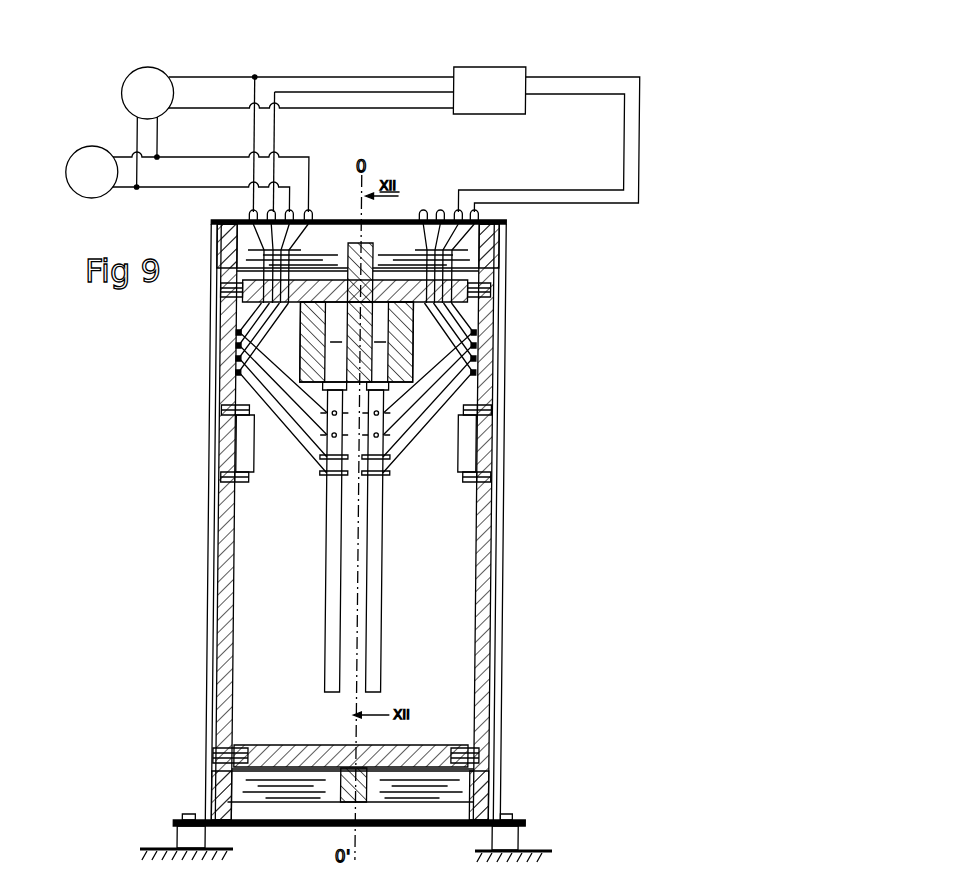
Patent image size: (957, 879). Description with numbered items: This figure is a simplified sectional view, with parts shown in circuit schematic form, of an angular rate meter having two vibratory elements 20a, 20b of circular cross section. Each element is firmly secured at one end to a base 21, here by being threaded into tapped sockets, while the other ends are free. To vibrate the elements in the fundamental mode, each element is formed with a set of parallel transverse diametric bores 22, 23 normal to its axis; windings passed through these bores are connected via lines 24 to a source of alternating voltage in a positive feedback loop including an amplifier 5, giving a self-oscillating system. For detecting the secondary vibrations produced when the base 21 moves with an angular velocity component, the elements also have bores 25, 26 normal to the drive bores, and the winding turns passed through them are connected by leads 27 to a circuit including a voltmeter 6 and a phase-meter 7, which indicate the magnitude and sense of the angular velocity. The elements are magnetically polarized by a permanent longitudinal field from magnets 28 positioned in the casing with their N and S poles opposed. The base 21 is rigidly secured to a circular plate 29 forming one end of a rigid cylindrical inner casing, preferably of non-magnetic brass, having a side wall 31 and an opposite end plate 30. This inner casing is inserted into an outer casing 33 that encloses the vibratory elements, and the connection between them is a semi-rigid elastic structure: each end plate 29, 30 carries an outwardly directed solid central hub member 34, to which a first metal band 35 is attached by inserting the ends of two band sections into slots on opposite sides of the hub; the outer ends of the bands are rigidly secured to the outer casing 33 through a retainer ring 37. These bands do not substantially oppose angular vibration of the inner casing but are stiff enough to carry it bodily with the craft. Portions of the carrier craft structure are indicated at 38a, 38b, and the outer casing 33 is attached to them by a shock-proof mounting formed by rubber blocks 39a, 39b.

The amplifier 5 is at (497, 106).
The voltmeter 6 is at (80, 163).
The phase-meter 7 is at (149, 74).
The vibratory element 20a is at (331, 661).
The vibratory element 20b is at (384, 660).
The base 21 is at (310, 336).
The transverse diametric bore 22 is at (382, 413).
The transverse diametric bore 23 is at (382, 436).
The lines 24 is at (622, 163).
The bore 25 is at (328, 458).
The bore 26 is at (333, 477).
The leads 27 is at (306, 203).
The magnet 28 is at (237, 443).
The circular plate 29 is at (470, 290).
The end plate 30 is at (278, 745).
The side wall 31 is at (240, 582).
The outer casing 33 is at (500, 788).
The central hub member 34 is at (373, 244).
The first metal band 35 is at (339, 253).
The retainer ring 37 is at (503, 245).
The carrier craft structure 38a is at (232, 857).
The carrier craft structure 38b is at (552, 861).
The rubber block 39a is at (190, 838).
The rubber block 39b is at (510, 843).